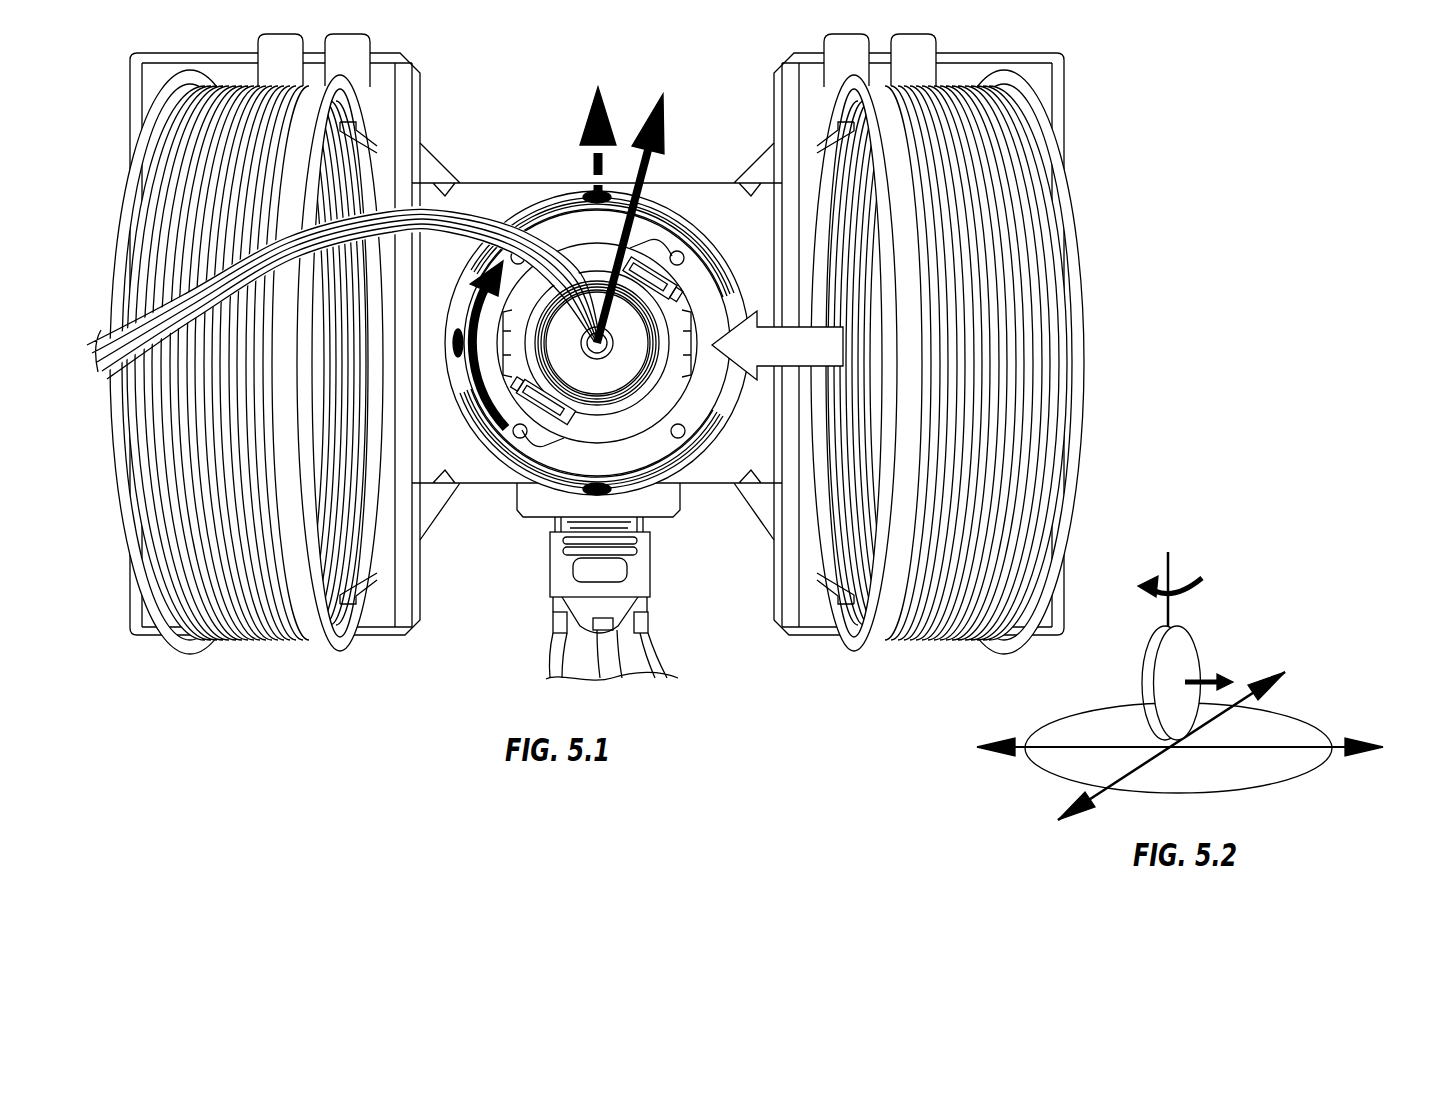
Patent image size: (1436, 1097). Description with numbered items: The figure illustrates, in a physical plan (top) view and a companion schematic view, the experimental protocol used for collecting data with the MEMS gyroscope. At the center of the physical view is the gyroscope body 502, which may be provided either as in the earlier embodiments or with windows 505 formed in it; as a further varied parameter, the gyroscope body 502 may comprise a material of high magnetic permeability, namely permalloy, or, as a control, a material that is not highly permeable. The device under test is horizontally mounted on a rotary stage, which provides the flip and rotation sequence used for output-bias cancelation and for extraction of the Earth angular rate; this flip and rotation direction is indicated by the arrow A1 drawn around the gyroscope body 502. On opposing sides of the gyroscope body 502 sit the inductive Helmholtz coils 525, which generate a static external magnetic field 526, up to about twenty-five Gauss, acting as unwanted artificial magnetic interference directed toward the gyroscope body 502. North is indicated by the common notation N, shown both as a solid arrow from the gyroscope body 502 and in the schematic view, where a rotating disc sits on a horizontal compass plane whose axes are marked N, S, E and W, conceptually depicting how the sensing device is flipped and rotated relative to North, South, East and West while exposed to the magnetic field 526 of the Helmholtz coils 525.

In FIG. 5.1, the Helmholtz coils 525 is at (593, 150).
In FIG. 5.1, the gyroscope body 502 is at (642, 415).
In FIG. 5.1, the windows 505 is at (668, 233).
In FIG. 5.1, the magnetic field 526 is at (803, 359).
In FIG. 5.1, the flip and rotation direction arrow A1 is at (495, 355).
In FIG. 5.1, the North N is at (665, 152).
In FIG. 5.2, the North N is at (1187, 732).
In FIG. 5.2, the west direction W is at (1165, 747).
In FIG. 5.2, the east direction E is at (1378, 747).
In FIG. 5.2, the south direction S is at (1064, 820).